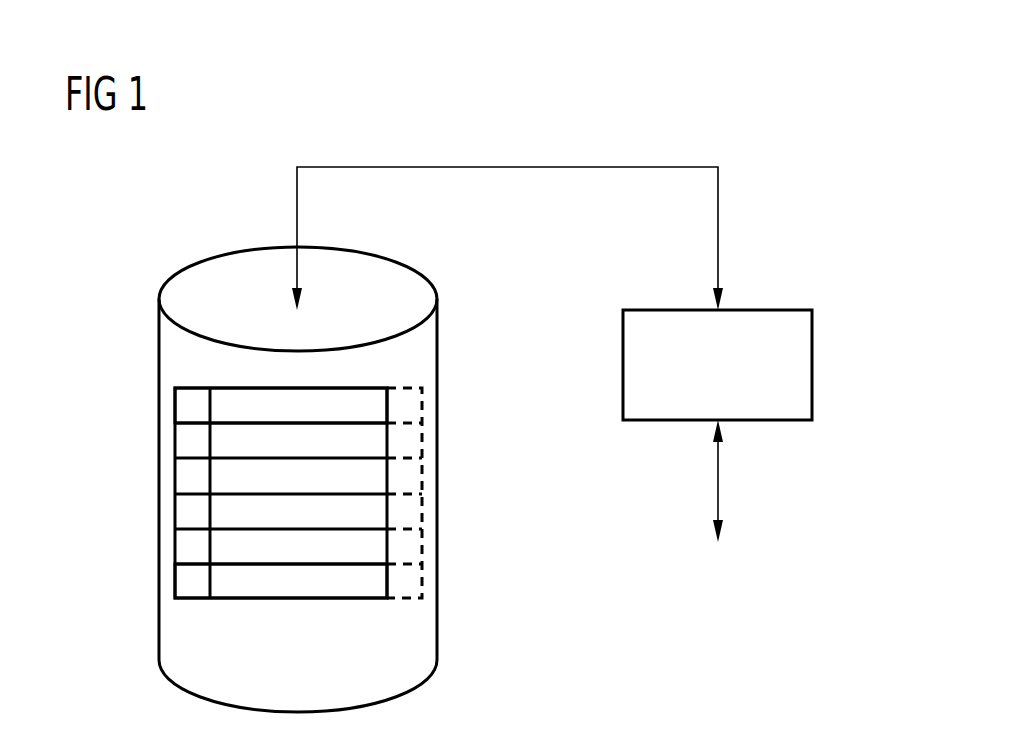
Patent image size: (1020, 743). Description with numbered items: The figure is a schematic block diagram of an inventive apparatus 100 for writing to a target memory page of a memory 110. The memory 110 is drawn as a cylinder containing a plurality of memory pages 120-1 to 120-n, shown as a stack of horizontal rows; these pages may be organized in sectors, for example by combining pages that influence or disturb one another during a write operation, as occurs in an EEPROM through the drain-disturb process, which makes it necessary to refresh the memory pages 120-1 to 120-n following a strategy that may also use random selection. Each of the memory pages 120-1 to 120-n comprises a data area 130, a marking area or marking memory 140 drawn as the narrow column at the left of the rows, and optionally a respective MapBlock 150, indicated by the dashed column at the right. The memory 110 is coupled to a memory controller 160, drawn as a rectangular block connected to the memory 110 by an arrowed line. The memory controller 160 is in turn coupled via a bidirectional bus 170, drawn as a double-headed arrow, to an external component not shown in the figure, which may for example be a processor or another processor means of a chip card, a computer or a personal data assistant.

The apparatus 100 is at (792, 160).
The memory 110 is at (437, 438).
The memory page 120-1 is at (175, 403).
The memory page 120-n is at (175, 578).
The data area 130 is at (297, 600).
The marking area 140 is at (195, 600).
The MapBlock 150 is at (422, 583).
The memory controller 160 is at (812, 366).
The bidirectional bus 170 is at (718, 478).